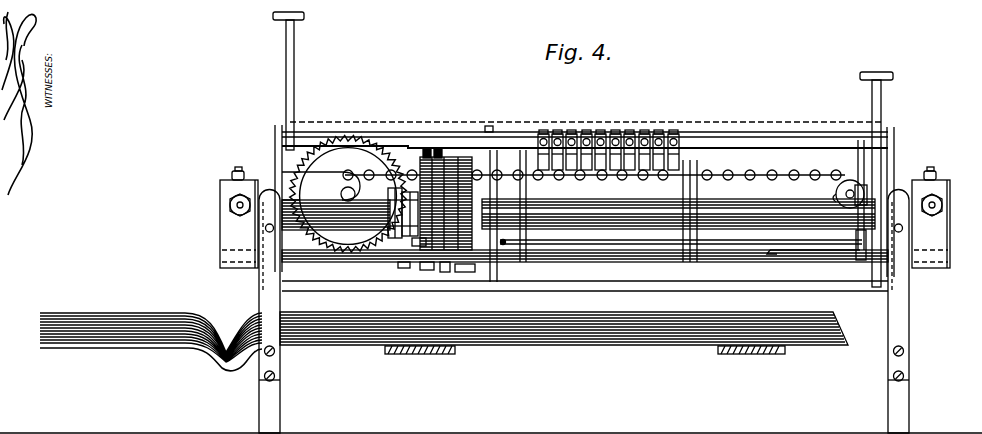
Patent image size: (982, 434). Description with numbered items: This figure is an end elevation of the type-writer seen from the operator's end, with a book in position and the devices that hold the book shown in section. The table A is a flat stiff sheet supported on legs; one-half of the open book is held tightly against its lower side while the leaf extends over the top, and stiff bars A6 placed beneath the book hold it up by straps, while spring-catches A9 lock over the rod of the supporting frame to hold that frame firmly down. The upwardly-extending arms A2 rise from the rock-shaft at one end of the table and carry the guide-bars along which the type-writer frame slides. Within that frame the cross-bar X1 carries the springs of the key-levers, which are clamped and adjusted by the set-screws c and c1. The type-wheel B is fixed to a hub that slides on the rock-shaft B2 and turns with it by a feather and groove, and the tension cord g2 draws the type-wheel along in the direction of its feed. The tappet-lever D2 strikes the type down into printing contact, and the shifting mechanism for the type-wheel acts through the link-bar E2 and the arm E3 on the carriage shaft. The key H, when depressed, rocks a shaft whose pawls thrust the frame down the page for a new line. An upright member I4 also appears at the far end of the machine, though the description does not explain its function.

The key H is at (293, 100).
The standard post I4 is at (881, 100).
The cross-bar X1 is at (482, 121).
The set-screws c is at (552, 134).
The set-screws c1 is at (597, 142).
The type-wheel B is at (446, 199).
The rock-shaft B2 is at (678, 214).
The tension strap or cord g2 is at (681, 242).
The link-bar E2 is at (788, 250).
The arm E3 is at (350, 213).
The upwardly-extending arms A2 is at (585, 254).
The tappet-lever D2 is at (398, 263).
The table A is at (585, 276).
The spring-catches A9 is at (236, 335).
The stiff bars A6 is at (772, 355).